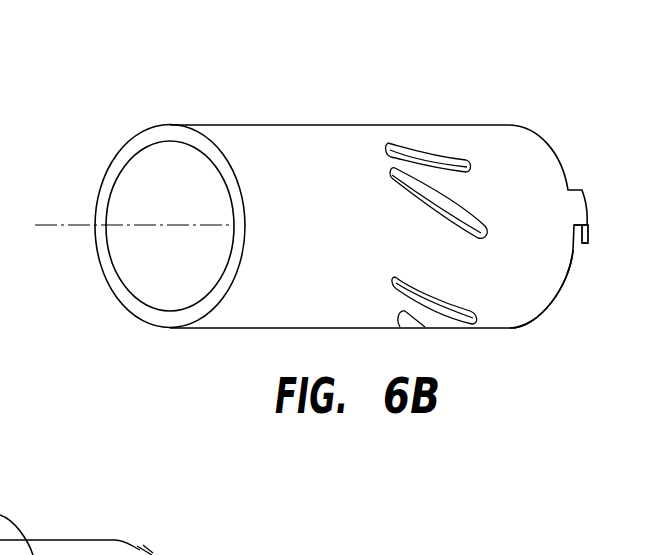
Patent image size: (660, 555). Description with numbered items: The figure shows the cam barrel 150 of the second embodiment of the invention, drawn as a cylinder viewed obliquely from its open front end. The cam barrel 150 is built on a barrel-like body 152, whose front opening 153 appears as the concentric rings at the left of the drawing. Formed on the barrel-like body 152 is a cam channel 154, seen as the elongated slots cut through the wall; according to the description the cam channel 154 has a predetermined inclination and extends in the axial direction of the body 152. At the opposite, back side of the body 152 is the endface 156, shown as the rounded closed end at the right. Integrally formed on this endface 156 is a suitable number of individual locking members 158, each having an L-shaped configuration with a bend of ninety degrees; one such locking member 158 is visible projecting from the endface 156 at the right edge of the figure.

The cam barrel 150 is at (363, 125).
The barrel-like body 152 is at (258, 124).
The inner bore 153 is at (157, 157).
The cam channel 154 is at (422, 187).
The endface 156 is at (555, 296).
The locking member 158 is at (590, 231).